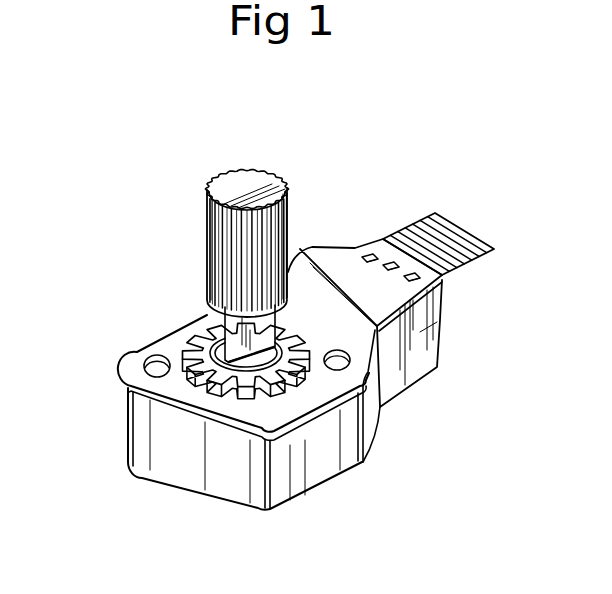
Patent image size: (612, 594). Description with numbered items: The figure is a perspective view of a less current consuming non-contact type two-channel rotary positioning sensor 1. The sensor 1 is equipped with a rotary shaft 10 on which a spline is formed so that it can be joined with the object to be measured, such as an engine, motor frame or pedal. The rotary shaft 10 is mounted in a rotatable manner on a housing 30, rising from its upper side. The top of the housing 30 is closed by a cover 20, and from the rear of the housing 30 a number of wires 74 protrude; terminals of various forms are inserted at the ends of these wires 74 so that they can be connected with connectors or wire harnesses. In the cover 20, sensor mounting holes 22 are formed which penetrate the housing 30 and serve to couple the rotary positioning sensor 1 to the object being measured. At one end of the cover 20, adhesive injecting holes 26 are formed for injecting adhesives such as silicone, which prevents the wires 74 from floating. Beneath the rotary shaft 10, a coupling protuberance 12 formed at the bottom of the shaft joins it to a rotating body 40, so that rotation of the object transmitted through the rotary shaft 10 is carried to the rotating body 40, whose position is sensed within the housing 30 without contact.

The rotary positioning sensor 1 is at (140, 152).
The rotary shaft 10 is at (277, 191).
The coupling protuberance 12 is at (224, 321).
The cover 20 is at (331, 253).
The sensor mounting holes 22 is at (140, 359).
The adhesive injecting holes 26 is at (370, 246).
The housing 30 is at (170, 469).
The rotating body 40 is at (295, 382).
The wires 74 is at (480, 258).